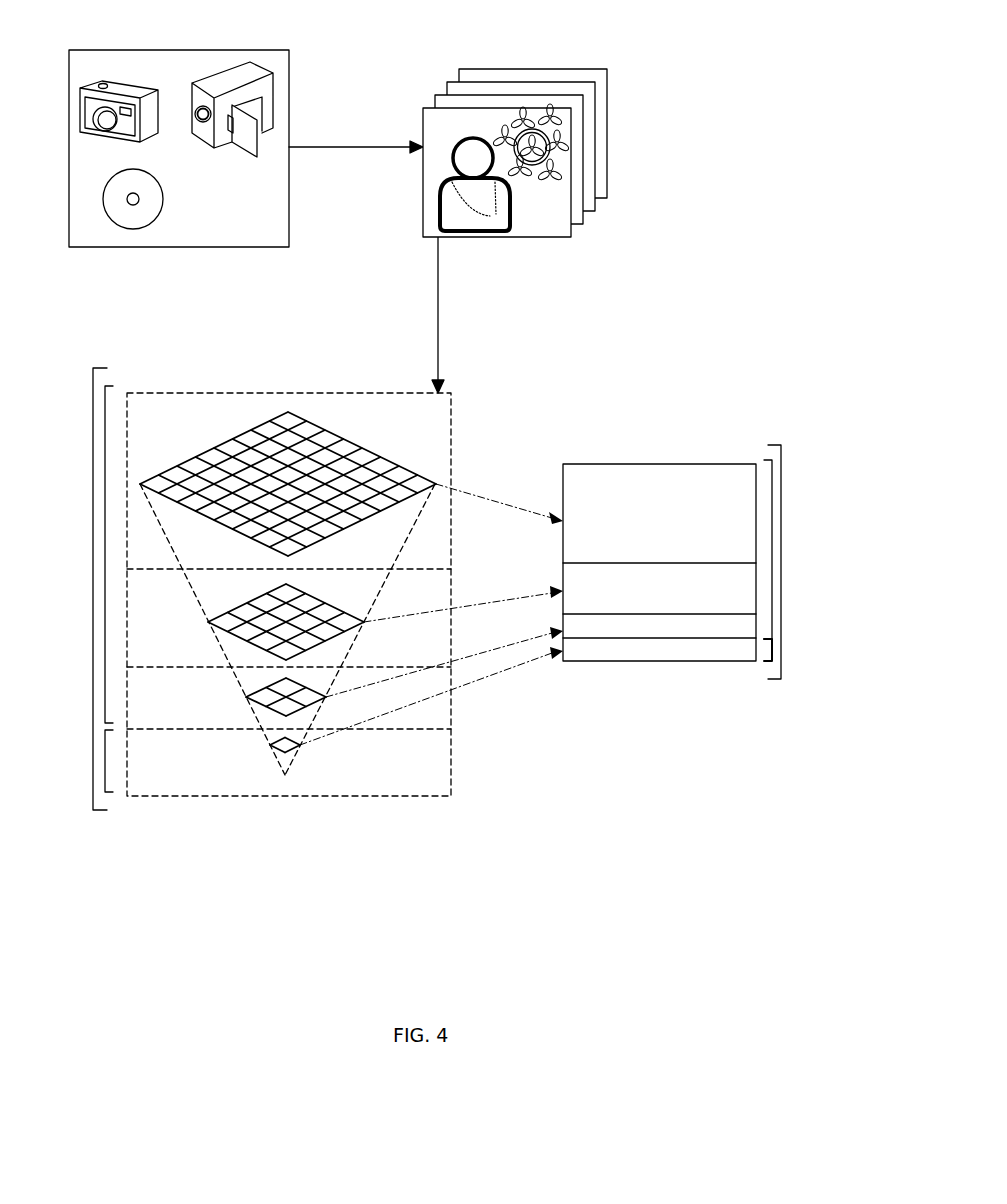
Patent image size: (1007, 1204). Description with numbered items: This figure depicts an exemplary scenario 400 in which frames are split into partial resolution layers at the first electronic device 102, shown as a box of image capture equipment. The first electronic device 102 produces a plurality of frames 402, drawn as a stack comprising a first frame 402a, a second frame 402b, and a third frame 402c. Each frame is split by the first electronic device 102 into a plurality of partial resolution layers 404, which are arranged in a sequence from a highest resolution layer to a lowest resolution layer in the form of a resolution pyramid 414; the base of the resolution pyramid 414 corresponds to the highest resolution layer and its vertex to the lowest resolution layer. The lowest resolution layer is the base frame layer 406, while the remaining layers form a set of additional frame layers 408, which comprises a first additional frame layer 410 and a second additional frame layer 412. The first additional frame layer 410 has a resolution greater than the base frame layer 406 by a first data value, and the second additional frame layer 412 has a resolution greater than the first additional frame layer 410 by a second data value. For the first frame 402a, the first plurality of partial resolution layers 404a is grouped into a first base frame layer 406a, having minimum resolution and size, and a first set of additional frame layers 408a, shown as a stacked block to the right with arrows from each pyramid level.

The first electronic device 102 is at (200, 51).
The image processing system 400 is at (660, 58).
The plurality of frames 402 is at (558, 69).
The first frame 402a is at (571, 237).
The second frame 402b is at (583, 223).
The third frame 402c is at (597, 183).
The plurality of partial resolution layers 404 is at (93, 497).
The first plurality of partial resolution layers 404a is at (781, 540).
The base frame layer 406 is at (103, 777).
The first base frame layer 406a is at (772, 652).
The set of additional frame layers 408 is at (103, 680).
The first set of additional frame layers 408a is at (772, 493).
The first additional frame layer 410 is at (245, 697).
The second additional frame layer 412 is at (207, 622).
The resolution pyramid 414 is at (257, 723).